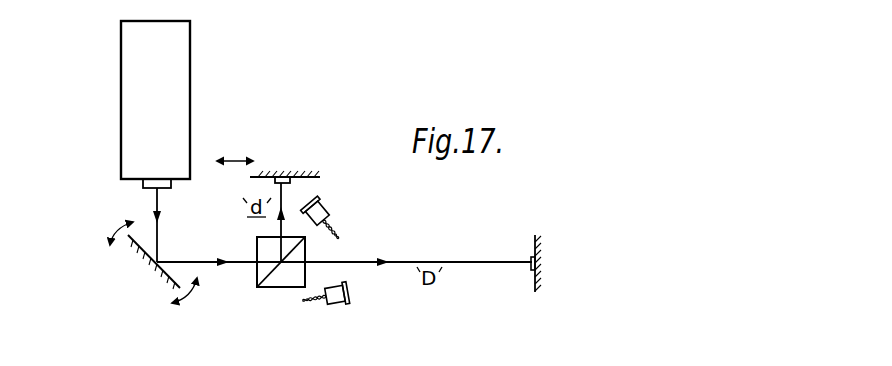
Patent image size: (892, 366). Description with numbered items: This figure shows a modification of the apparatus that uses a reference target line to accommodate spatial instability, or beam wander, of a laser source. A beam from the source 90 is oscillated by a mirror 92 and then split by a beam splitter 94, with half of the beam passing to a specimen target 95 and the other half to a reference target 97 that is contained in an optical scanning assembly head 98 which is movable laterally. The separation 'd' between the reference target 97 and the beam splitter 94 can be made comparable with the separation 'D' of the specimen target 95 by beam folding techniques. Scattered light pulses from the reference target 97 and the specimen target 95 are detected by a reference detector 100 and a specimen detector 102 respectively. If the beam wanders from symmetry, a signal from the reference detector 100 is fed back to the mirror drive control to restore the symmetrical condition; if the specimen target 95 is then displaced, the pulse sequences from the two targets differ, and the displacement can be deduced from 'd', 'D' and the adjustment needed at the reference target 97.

The source 90 is at (128, 90).
The mirror 92 is at (163, 273).
The beam splitter 94 is at (257, 251).
The specimen target 95 is at (530, 268).
The reference target 97 is at (292, 181).
The optical scanning assembly head 98 is at (271, 172).
The reference detector 100 is at (330, 214).
The specimen detector 102 is at (342, 304).